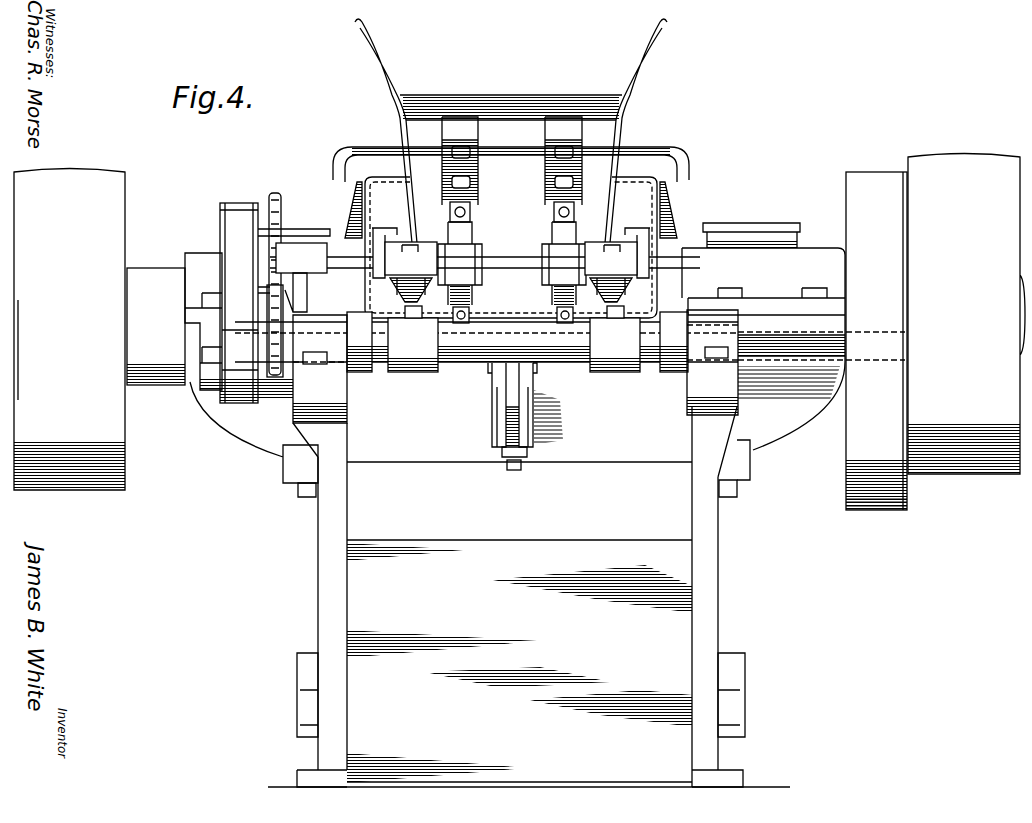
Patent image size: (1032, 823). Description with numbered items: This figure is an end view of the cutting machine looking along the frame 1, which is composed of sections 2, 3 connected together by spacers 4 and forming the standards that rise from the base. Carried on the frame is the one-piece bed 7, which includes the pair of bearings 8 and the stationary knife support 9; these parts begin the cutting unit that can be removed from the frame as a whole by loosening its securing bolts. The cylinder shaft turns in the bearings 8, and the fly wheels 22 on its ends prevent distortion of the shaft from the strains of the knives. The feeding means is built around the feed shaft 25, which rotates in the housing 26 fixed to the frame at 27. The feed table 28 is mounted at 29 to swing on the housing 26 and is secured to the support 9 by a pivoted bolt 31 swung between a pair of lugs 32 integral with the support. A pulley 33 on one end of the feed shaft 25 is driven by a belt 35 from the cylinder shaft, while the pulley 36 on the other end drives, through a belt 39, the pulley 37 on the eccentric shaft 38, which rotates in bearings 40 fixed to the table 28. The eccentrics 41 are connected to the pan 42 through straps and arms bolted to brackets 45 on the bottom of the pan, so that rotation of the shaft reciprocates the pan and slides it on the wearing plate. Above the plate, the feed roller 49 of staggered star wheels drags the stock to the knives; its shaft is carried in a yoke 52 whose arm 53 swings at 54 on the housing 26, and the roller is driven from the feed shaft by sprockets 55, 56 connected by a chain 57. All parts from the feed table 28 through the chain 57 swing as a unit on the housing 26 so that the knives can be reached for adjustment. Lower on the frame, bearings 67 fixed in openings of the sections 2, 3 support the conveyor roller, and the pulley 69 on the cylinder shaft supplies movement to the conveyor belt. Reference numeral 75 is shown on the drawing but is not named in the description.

The frame 1 is at (736, 577).
The section 2 is at (332, 597).
The section 3 is at (715, 620).
The spacers 4 is at (519, 622).
The bed 7 is at (283, 458).
The bearings 8 is at (196, 265).
The stationary knife support 9 is at (396, 423).
The fly wheels 22 is at (108, 212).
The feed shaft 25 is at (817, 338).
The housing 26 is at (575, 375).
The fixing point of housing 27 is at (325, 372).
The feed table 28 is at (382, 232).
The mounting of feed table 29 is at (418, 374).
The pivoted bolt 31 is at (517, 472).
The lugs 32 is at (495, 434).
The pulley 33 is at (846, 488).
The belt 35 is at (872, 512).
The pulley 36 is at (228, 400).
The pulley 37 is at (222, 210).
The eccentric shaft 38 is at (503, 262).
The belt 39 is at (250, 205).
The bearings 40 is at (420, 242).
The eccentrics 41 is at (558, 290).
The pan 42 is at (512, 108).
The brackets 45 is at (556, 128).
The feed roller 49 is at (640, 232).
The yoke 52 is at (678, 153).
The arm 53 is at (350, 242).
The pivot of yoke arm 54 is at (358, 374).
The sprocket 55 is at (278, 193).
The sprocket 56 is at (282, 385).
The chain 57 is at (262, 289).
The bearings 67 is at (298, 660).
The pulley 69 is at (150, 385).
The bolt 75 is at (305, 497).